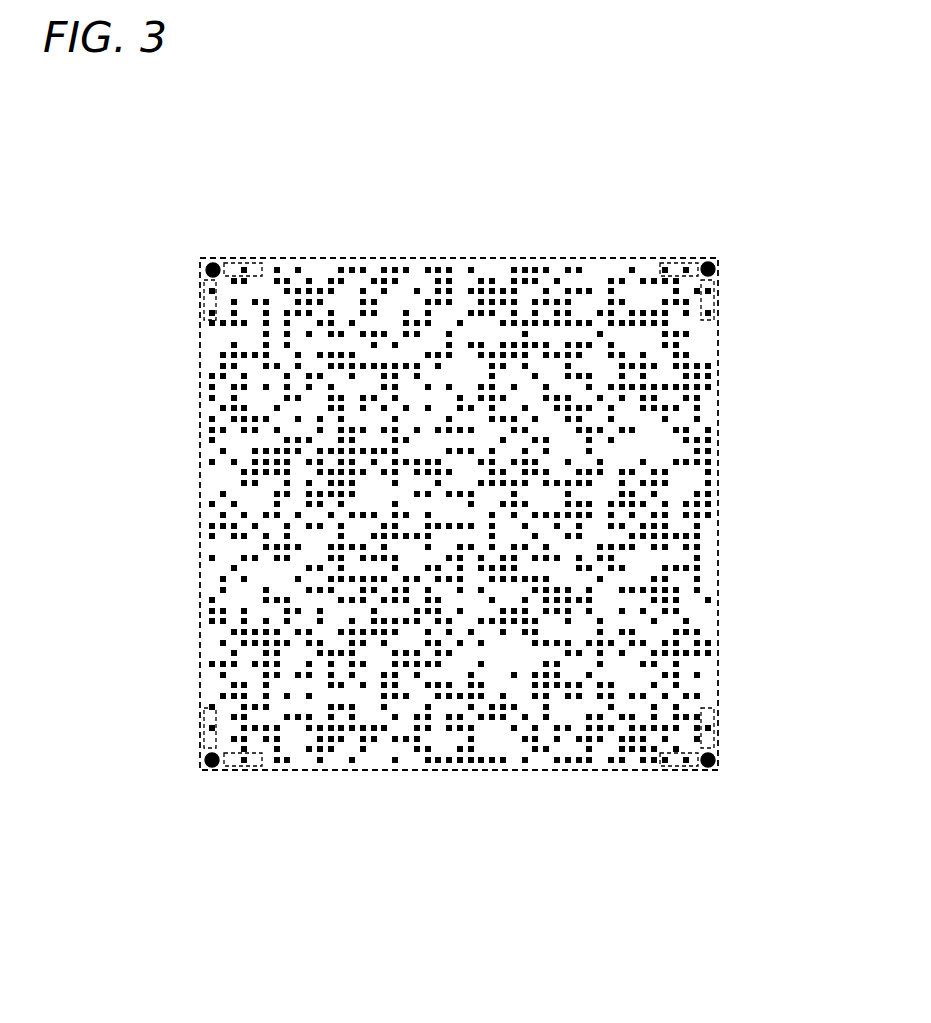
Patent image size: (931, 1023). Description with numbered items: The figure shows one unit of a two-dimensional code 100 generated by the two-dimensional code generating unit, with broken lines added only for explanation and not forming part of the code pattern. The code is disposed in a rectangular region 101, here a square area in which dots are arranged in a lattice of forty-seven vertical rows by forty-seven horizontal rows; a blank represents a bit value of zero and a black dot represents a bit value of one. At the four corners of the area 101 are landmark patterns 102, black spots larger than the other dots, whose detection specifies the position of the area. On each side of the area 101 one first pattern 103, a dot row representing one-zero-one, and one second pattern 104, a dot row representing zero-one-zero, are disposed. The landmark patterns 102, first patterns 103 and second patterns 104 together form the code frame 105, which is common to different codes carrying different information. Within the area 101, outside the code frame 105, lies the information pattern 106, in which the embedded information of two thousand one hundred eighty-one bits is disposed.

The two-dimensional code 100 is at (162, 712).
The rectangular region 101 is at (460, 257).
The landmark pattern 102 is at (208, 264).
The first pattern 103 is at (200, 295).
The second pattern 104 is at (248, 257).
The code frame 105 is at (249, 156).
The information pattern 106 is at (706, 559).